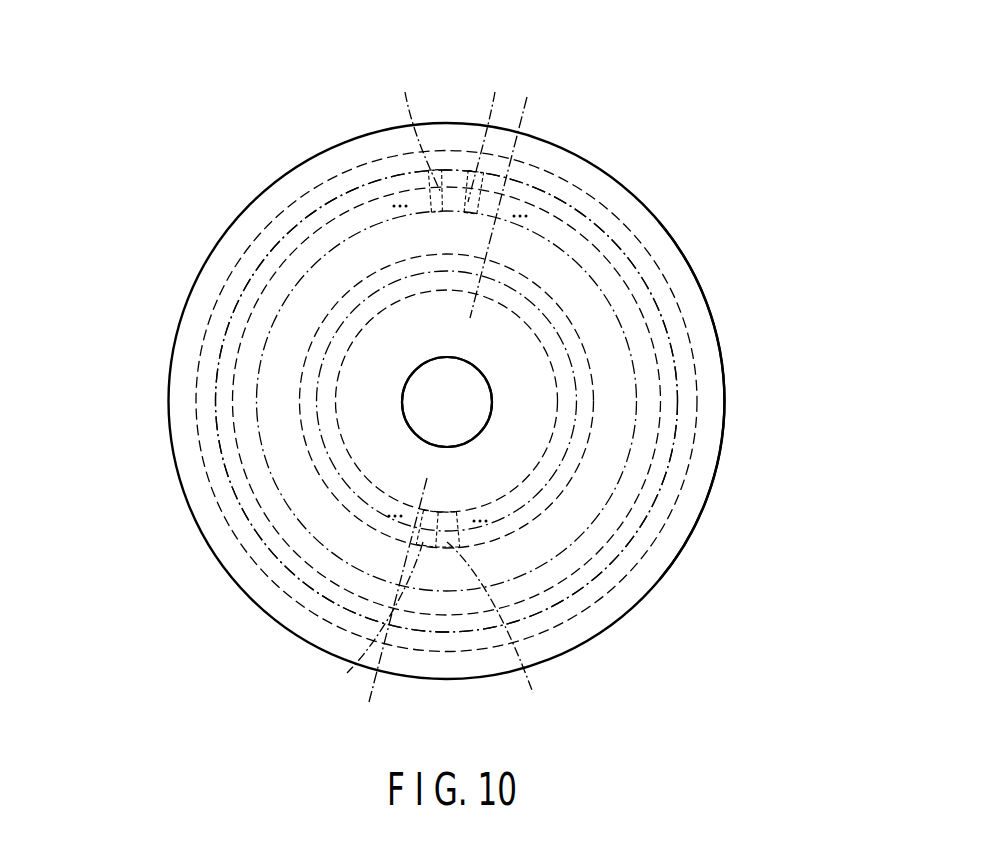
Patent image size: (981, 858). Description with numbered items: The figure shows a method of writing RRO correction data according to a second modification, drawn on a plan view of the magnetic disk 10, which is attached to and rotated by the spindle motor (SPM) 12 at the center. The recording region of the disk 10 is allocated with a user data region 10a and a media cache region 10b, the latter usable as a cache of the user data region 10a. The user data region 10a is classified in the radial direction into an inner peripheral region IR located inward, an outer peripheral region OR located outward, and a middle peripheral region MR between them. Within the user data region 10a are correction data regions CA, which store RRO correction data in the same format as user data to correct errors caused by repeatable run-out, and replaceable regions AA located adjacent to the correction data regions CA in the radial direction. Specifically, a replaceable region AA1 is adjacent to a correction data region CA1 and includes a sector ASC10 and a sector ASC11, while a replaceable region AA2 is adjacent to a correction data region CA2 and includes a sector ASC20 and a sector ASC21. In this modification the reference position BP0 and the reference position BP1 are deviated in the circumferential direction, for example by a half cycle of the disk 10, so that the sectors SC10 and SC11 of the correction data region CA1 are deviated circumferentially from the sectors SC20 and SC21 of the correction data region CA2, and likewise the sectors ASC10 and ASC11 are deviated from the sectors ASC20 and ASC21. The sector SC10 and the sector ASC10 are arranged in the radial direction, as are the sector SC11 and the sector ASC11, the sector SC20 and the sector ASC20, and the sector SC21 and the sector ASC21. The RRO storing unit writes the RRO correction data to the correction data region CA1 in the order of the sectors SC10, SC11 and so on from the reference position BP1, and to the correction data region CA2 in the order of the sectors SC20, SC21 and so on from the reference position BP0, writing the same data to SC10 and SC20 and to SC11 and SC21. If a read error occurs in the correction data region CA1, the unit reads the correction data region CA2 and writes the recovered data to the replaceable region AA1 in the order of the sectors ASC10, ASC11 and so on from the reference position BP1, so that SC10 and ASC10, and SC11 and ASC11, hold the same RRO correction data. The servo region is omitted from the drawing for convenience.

The magnetic disk 10 is at (716, 316).
The user data region 10a is at (653, 523).
The media cache region 10b is at (713, 425).
The spindle motor 12 is at (446, 357).
The spindle motor SPM is at (447, 402).
The inner peripheral region IR is at (528, 440).
The middle peripheral region MR is at (617, 387).
The outer peripheral region OR is at (665, 302).
The replaceable region AA is at (175, 268).
The replaceable region AA1 is at (307, 400).
The replaceable region AA2 is at (227, 400).
The correction data region CA is at (582, 113).
The correction data region CA1 is at (540, 323).
The correction data region CA2 is at (548, 230).
The sector SC10 is at (423, 513).
The sector SC11 is at (447, 513).
The sector SC20 is at (480, 212).
The sector SC21 is at (430, 178).
The sector ASC10 is at (346, 618).
The sector ASC11 is at (505, 629).
The sector ASC20 is at (493, 133).
The sector ASC21 is at (407, 128).
The reference position BP0 is at (523, 118).
The reference position BP1 is at (373, 675).